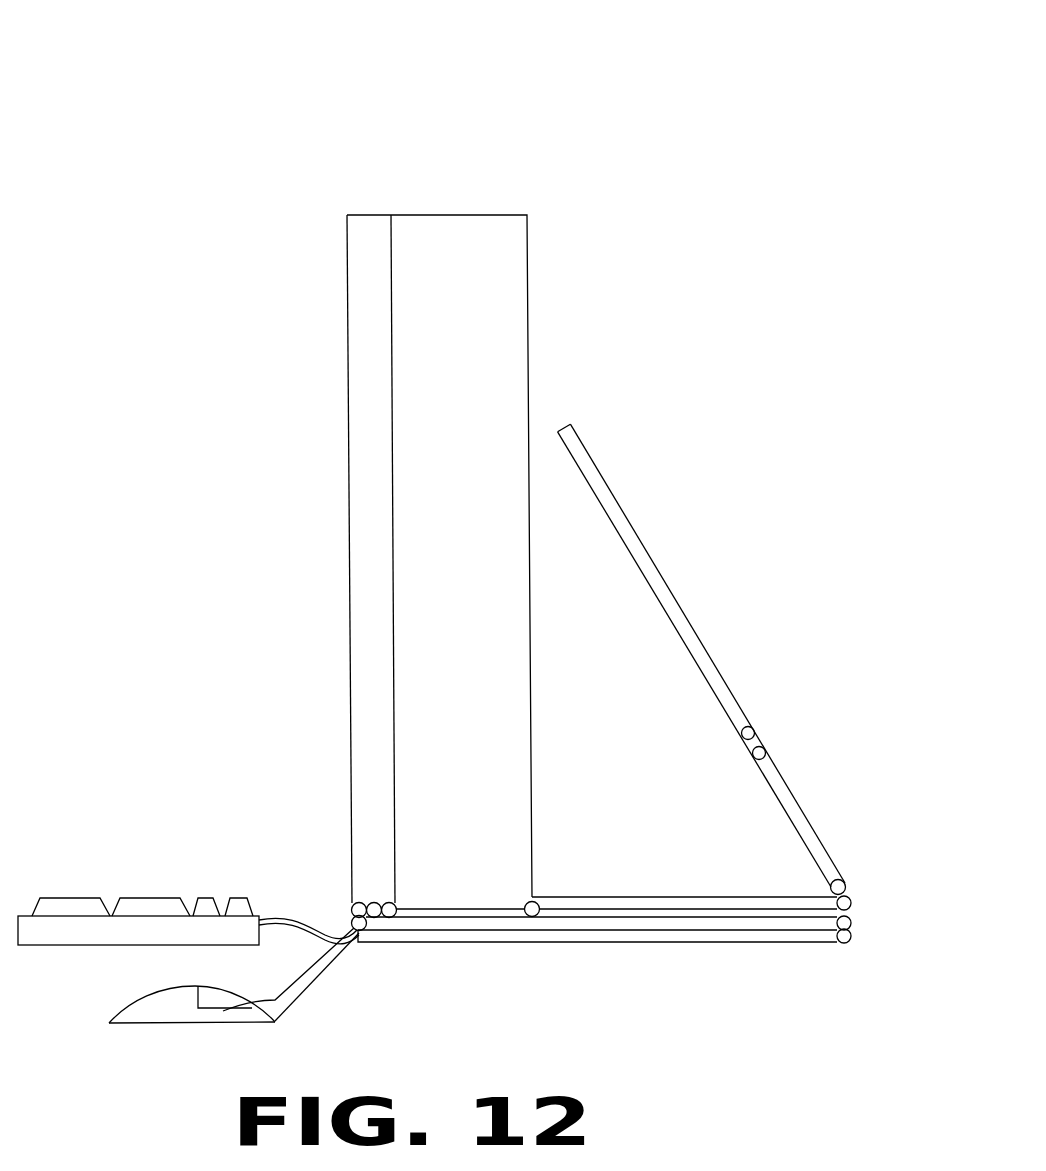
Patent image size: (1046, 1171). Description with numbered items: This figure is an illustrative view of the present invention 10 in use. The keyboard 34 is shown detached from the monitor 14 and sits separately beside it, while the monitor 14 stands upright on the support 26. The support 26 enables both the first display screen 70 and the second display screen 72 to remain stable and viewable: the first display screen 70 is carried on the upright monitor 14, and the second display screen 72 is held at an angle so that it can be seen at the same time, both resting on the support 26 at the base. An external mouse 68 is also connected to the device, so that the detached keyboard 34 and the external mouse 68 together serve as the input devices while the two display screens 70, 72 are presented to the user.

The present invention 10 is at (712, 100).
The monitor 14 is at (600, 312).
The first display screen 70 is at (363, 587).
The second display screen 72 is at (672, 590).
The support 26 is at (727, 905).
The keyboard 34 is at (183, 923).
The external mouse 68 is at (287, 1006).